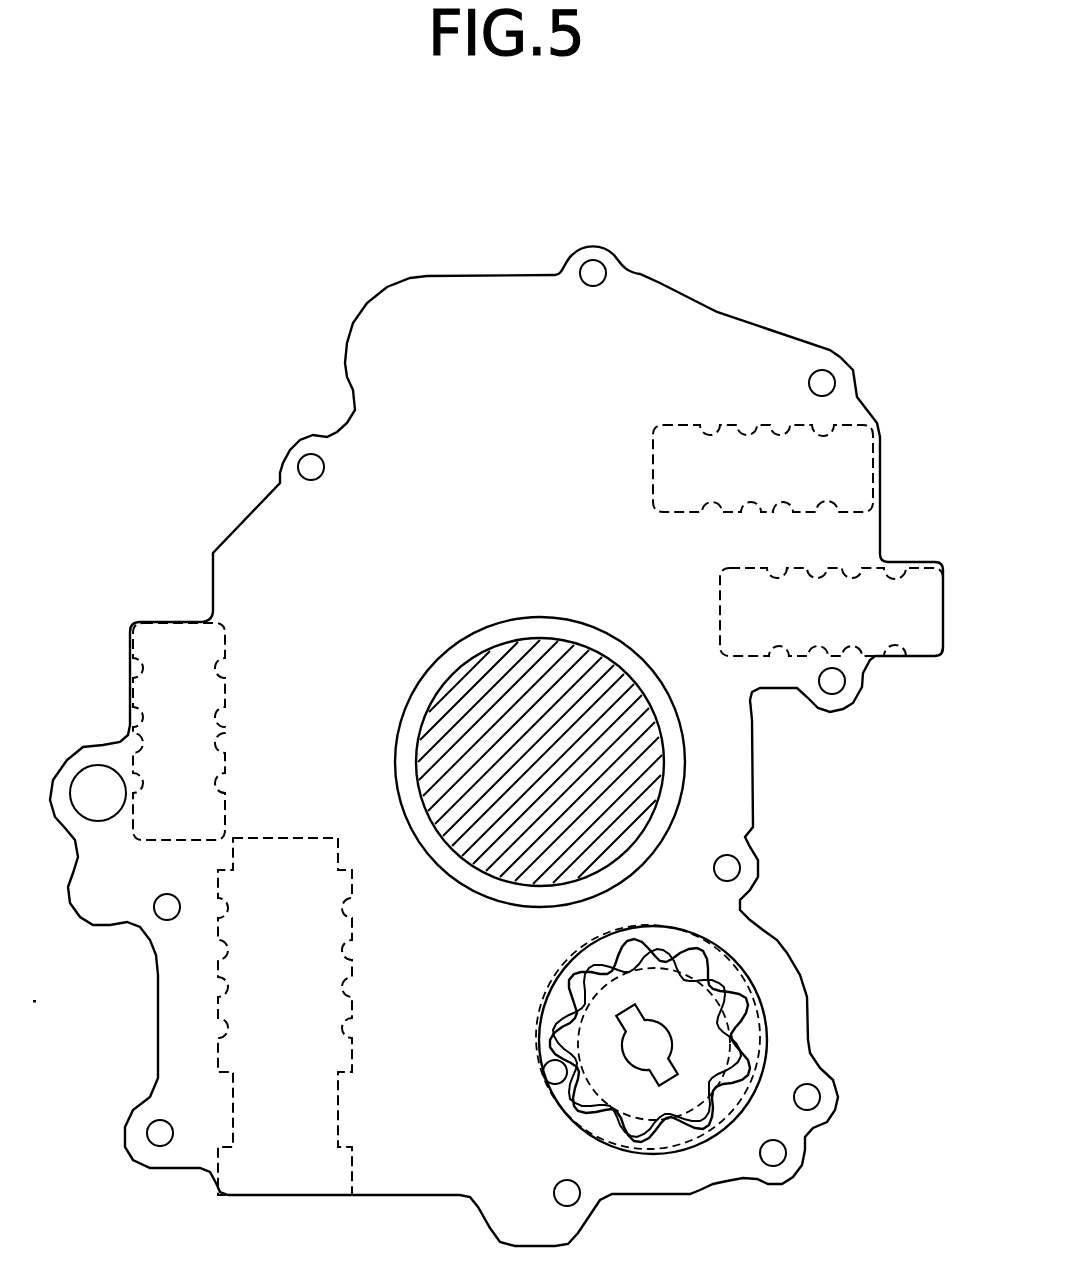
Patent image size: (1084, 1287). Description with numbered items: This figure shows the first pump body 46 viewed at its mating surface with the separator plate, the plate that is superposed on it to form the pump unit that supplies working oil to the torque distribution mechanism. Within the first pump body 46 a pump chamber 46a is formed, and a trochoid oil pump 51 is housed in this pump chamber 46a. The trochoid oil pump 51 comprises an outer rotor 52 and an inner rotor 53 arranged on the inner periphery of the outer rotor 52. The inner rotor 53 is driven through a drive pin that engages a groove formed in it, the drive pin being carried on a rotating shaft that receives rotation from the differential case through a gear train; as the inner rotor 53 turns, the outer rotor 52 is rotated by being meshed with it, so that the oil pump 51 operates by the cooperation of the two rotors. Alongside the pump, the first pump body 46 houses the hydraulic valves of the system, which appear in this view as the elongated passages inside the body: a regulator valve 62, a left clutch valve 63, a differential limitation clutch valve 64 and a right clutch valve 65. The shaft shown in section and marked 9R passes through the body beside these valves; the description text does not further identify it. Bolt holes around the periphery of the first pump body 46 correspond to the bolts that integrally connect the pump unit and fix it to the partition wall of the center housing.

The first pump body 46 is at (523, 271).
The pump chamber 46a is at (557, 1068).
The right shaft 9R is at (535, 673).
The trochoid oil pump 51 is at (725, 1018).
The outer rotor 52 is at (750, 1025).
The inner rotor 53 is at (668, 998).
The regulator valve 62 is at (338, 938).
The left clutch valve 63 is at (730, 610).
The differential limitation clutch valve 64 is at (213, 727).
The right clutch valve 65 is at (730, 424).